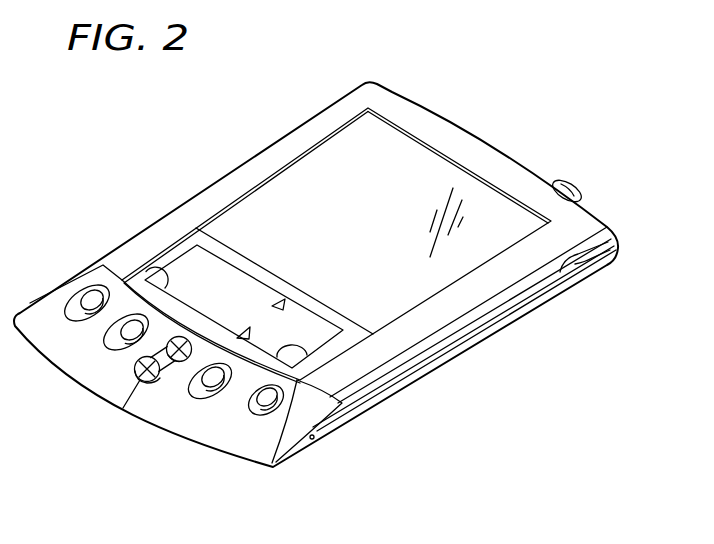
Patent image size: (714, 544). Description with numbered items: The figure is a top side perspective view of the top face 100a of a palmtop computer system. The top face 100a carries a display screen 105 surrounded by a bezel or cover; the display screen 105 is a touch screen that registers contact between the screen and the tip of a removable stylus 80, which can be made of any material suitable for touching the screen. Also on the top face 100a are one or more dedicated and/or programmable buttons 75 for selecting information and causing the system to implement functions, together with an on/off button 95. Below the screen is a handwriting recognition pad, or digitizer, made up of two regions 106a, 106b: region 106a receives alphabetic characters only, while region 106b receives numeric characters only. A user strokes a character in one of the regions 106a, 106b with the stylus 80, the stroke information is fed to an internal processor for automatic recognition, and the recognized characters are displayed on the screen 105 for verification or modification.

The top face 100a is at (158, 100).
The display screen 105 is at (387, 163).
The region 106a is at (222, 286).
The region 106b is at (293, 332).
The buttons 75 is at (92, 298).
The stylus 80 is at (468, 340).
The on/off button 95 is at (580, 183).